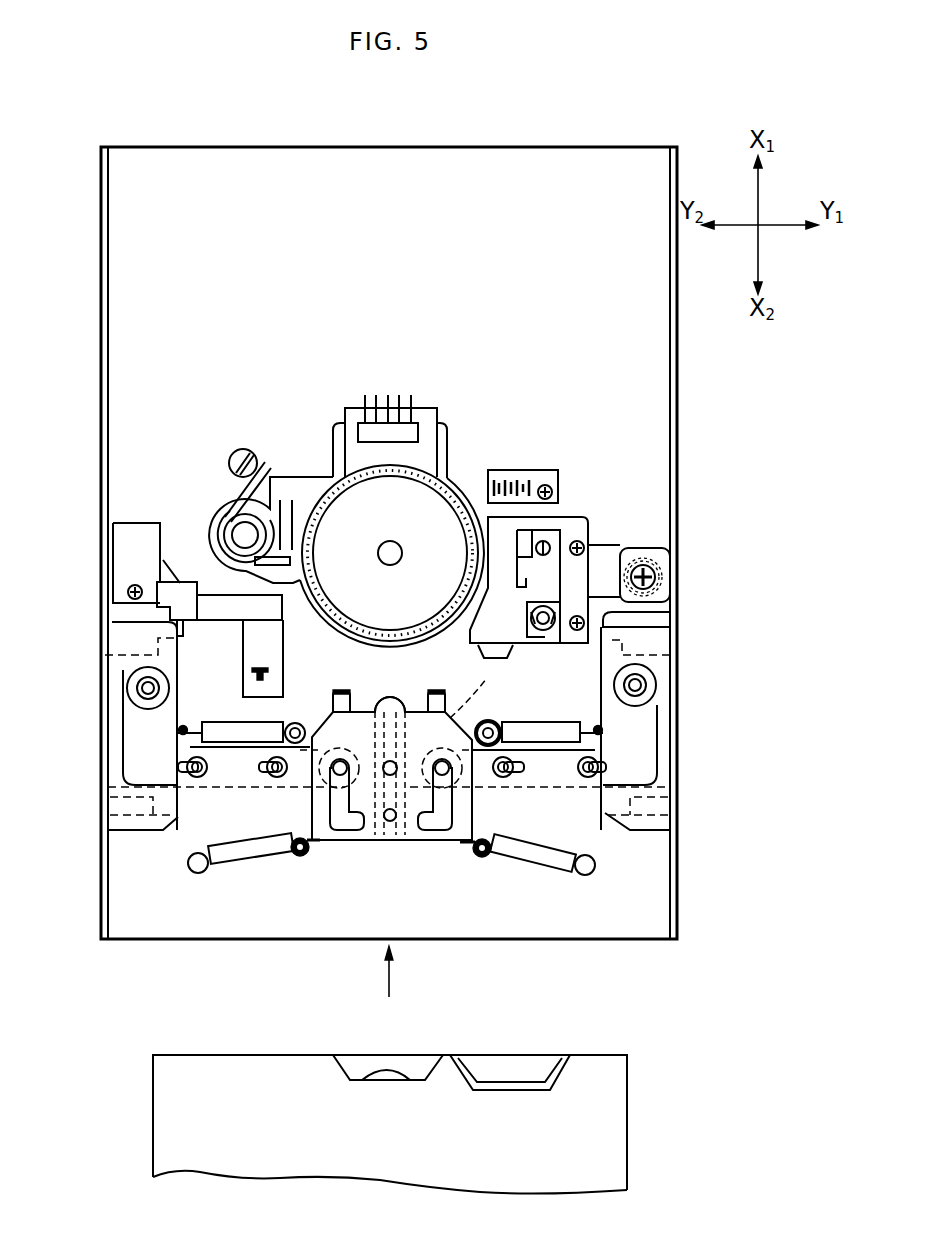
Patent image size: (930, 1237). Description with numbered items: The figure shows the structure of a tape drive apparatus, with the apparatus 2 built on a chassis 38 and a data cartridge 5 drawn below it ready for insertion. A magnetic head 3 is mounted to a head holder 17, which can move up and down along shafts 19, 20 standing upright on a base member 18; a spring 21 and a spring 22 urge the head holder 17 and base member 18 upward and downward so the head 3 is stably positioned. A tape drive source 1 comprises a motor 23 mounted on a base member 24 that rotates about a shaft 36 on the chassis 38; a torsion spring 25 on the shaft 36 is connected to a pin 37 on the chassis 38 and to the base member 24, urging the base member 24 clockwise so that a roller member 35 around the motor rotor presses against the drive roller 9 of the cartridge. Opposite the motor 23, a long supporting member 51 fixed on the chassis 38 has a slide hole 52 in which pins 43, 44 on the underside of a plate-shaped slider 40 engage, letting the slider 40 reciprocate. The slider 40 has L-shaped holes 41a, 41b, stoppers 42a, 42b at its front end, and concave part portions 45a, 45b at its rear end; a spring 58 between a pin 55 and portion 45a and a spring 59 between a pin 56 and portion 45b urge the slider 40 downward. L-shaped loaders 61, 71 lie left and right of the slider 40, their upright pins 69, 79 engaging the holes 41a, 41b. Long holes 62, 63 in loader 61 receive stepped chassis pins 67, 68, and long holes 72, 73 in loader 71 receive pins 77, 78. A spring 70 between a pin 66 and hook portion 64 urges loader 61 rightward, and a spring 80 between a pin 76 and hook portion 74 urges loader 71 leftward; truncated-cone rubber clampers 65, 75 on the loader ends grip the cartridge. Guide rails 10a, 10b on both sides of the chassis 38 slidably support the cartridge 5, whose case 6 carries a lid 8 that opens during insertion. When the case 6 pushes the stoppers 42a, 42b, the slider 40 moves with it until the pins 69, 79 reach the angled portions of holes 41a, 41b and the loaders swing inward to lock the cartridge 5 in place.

The tape drive source 1 is at (461, 455).
The carriage frame 2 is at (421, 523).
The magnetic head 3 is at (500, 658).
The data cartridge 5 is at (604, 1118).
The case 6 is at (165, 1113).
The lid 8 is at (512, 1080).
The drive roller 9 is at (387, 1080).
The guide rail 10a is at (112, 667).
The guide rail 10b is at (660, 690).
The head holder 17 is at (517, 628).
The base member 18 is at (583, 560).
The shaft 19 is at (557, 627).
The shaft 20 is at (548, 546).
The spring 21 is at (527, 557).
The spring 22 is at (653, 577).
The motor 23 is at (443, 532).
The base member 24 is at (304, 497).
The torsion spring 25 is at (226, 514).
The roller member 35 is at (347, 470).
The shaft 36 is at (238, 534).
The pin 37 is at (238, 452).
The chassis 38 is at (635, 356).
The slider 40 is at (365, 841).
The L-shaped hole 41a is at (340, 815).
The L-shaped hole 41b is at (445, 815).
The stopper 42a is at (333, 690).
The stopper 42b is at (436, 692).
The pin 43 is at (396, 840).
The pin 44 is at (386, 701).
The concave part portion 45a is at (310, 853).
The concave part portion 45b is at (484, 856).
The long supporting member 51 is at (391, 761).
The slide hole 52 is at (493, 670).
The pin 55 is at (192, 866).
The pin 56 is at (598, 868).
The spring 58 is at (251, 857).
The spring 59 is at (552, 868).
The L-shaped loader 61 is at (132, 758).
The long hole 62 is at (182, 775).
The long hole 63 is at (268, 775).
The concave part portion 64 is at (185, 728).
The clamper 65 is at (135, 692).
The pin 66 is at (291, 725).
The pin 67 is at (199, 778).
The pin 68 is at (277, 778).
The pin 69 is at (340, 761).
The spring 70 is at (226, 722).
The L-shaped loader 71 is at (650, 752).
The long hole 72 is at (600, 782).
The long hole 73 is at (518, 771).
The concave part portion 74 is at (597, 729).
The clamper 75 is at (653, 690).
The pin 76 is at (484, 726).
The pin 77 is at (584, 779).
The pin 78 is at (503, 776).
The pin 79 is at (441, 808).
The spring 80 is at (530, 742).